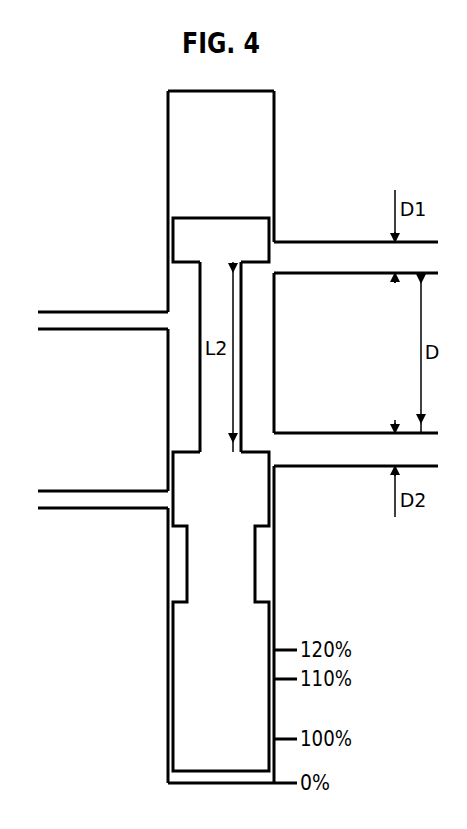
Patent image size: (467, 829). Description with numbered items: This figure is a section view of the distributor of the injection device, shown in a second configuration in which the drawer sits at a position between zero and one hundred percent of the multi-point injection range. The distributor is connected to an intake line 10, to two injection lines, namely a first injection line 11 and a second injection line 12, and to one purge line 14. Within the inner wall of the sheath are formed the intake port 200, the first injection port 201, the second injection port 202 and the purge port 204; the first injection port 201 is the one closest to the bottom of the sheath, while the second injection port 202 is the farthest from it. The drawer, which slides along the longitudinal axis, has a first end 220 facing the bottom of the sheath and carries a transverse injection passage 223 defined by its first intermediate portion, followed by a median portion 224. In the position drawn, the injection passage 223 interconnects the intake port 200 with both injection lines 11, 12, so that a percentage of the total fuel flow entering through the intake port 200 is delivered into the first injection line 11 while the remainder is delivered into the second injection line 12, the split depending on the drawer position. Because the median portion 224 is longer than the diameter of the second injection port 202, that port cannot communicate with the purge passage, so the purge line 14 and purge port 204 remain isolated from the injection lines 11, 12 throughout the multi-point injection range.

The intake line 10 is at (87, 312).
The first injection line 11 is at (343, 242).
The second injection line 12 is at (343, 433).
The purge line 14 is at (87, 491).
The intake port 200 is at (163, 320).
The first injection port 201 is at (280, 257).
The second injection port 202 is at (280, 450).
The purge port 204 is at (163, 498).
The first end 220 is at (270, 232).
The injection passage 223 is at (182, 400).
The median portion 224 is at (270, 493).